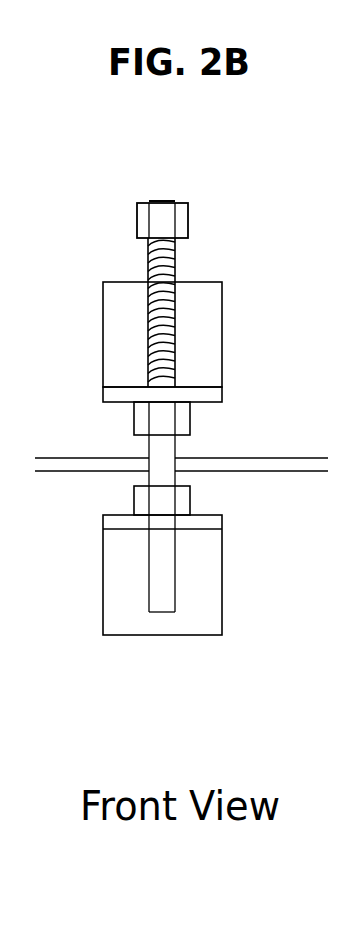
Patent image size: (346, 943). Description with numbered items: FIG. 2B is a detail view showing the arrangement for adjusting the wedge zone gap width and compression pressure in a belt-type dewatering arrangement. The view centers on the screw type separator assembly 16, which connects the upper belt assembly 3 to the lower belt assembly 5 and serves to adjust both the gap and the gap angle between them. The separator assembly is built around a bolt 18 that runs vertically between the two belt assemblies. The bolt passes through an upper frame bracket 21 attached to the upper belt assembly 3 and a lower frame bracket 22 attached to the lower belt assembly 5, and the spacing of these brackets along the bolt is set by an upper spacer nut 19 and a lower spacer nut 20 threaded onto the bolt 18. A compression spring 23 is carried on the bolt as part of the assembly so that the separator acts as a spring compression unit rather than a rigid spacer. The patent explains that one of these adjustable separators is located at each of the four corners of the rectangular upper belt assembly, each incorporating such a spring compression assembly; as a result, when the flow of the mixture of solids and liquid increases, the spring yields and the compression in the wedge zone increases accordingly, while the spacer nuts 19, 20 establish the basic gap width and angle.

The screw type separator assembly 16 is at (202, 371).
The bolt 18 is at (180, 203).
The compression spring 23 is at (172, 262).
The upper frame bracket 21 is at (207, 340).
The upper spacer nut 19 is at (132, 428).
The upper belt assembly 3 is at (250, 435).
The lower belt assembly 5 is at (258, 490).
The lower spacer nut 20 is at (132, 503).
The lower frame bracket 22 is at (203, 575).